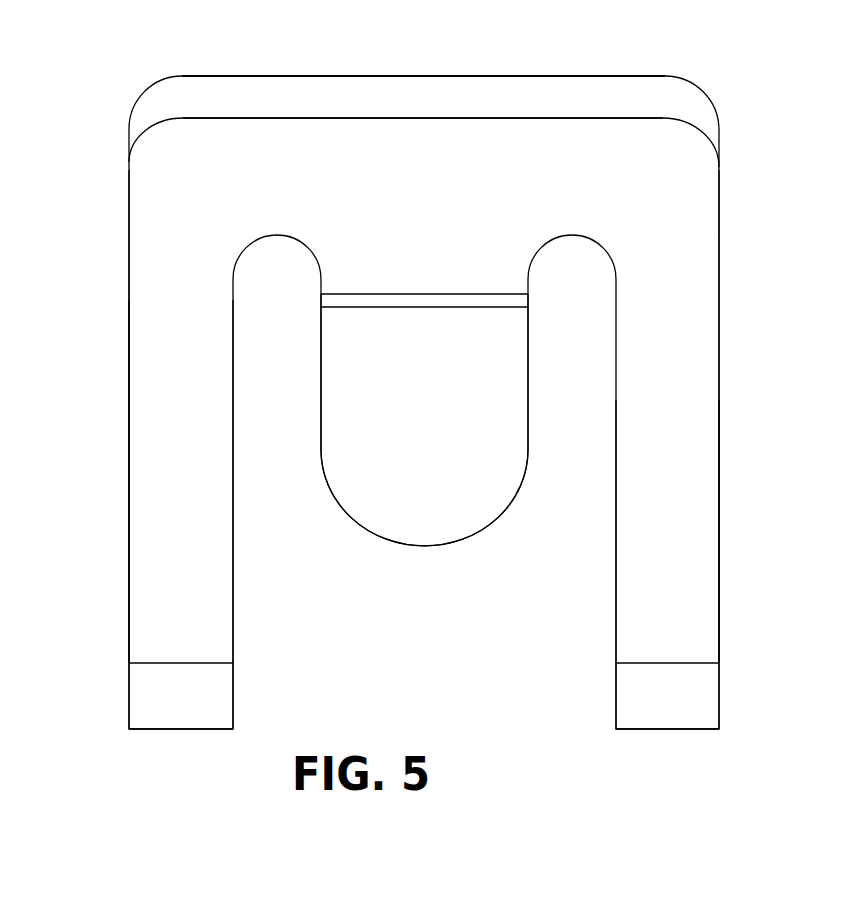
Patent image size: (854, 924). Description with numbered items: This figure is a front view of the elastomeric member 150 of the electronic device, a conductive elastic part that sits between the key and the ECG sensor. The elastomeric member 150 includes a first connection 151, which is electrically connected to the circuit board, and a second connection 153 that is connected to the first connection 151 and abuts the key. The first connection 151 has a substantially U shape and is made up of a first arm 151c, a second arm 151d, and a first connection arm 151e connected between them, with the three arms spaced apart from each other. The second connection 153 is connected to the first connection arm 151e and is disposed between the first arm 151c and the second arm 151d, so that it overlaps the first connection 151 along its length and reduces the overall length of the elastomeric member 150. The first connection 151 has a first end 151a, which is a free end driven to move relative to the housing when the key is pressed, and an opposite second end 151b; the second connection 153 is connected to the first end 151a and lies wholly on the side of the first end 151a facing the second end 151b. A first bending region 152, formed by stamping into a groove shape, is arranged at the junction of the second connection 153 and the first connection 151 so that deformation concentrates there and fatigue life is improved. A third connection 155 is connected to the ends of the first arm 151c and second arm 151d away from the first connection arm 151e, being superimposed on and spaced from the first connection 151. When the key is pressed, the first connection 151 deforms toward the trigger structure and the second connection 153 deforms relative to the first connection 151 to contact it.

The elastomeric member 150 is at (168, 110).
The first connection 151 is at (137, 438).
The first end 151a is at (147, 158).
The second end 151b is at (148, 678).
The first arm 151c is at (147, 522).
The second arm 151d is at (631, 617).
The first connection arm 151e is at (482, 193).
The first bending region 152 is at (503, 298).
The second connection 153 is at (395, 488).
The third connection 155 is at (428, 107).